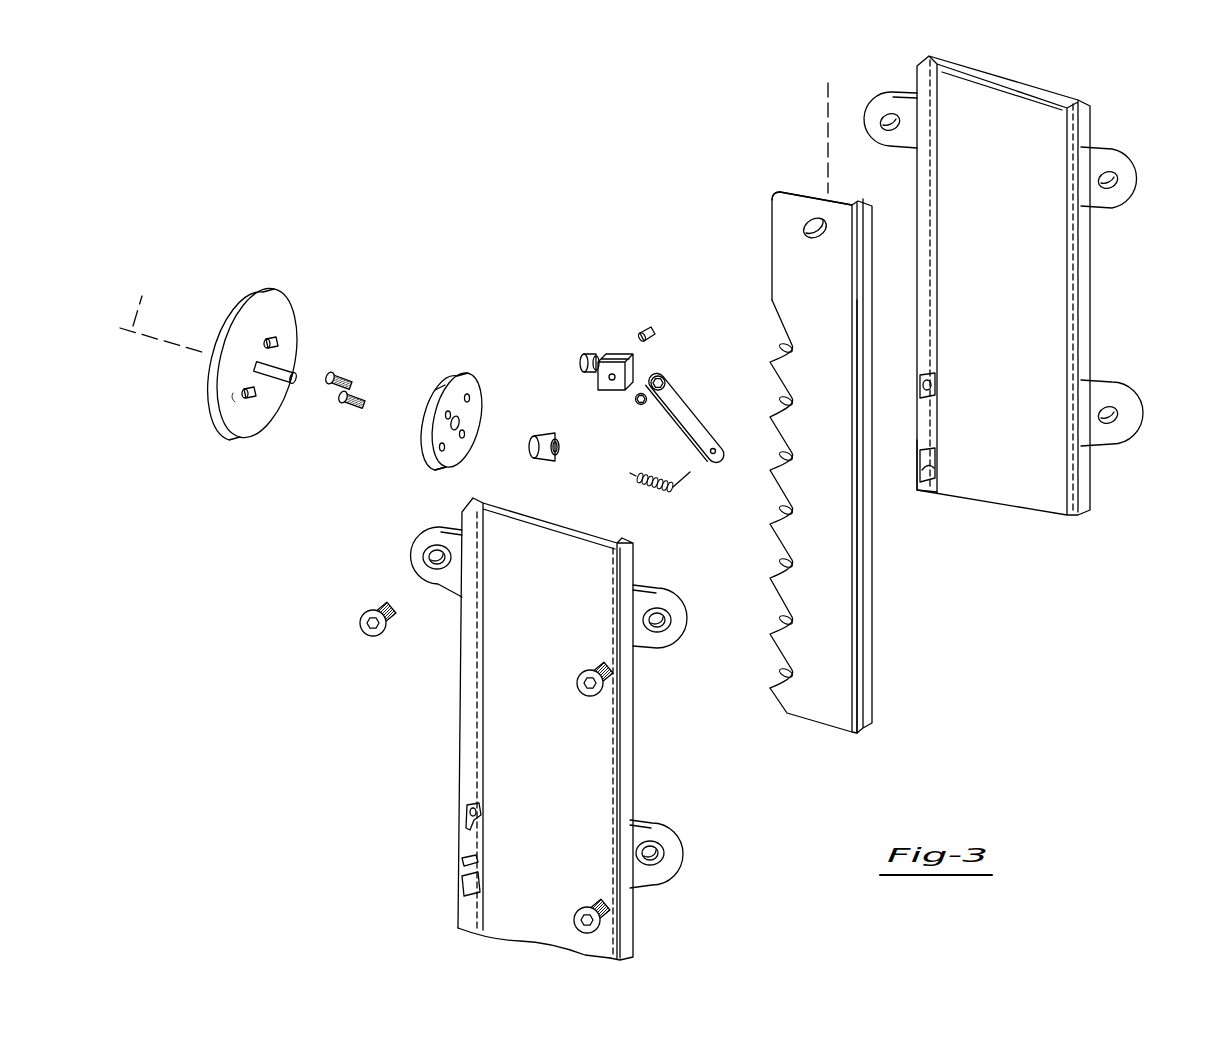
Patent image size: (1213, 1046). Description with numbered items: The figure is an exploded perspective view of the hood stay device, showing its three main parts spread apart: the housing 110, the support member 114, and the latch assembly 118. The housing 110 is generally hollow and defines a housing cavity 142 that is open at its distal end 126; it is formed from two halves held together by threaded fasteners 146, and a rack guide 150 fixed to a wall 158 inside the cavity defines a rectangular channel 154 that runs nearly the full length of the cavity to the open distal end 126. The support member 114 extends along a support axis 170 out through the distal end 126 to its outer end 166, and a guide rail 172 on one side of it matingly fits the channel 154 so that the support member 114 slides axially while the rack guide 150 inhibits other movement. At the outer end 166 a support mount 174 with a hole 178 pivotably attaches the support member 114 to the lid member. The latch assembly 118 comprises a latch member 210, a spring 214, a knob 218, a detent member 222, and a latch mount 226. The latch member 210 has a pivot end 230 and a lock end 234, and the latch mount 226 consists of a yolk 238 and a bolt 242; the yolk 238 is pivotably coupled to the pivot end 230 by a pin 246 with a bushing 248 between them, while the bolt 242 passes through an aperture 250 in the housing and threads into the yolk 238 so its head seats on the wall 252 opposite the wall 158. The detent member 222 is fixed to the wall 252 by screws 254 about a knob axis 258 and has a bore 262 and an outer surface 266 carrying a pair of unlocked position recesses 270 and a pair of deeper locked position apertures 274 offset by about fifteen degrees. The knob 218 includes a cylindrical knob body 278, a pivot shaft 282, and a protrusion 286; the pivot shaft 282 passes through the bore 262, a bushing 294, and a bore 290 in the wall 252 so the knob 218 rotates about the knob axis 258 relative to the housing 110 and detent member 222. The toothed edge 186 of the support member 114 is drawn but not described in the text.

The housing 110 is at (779, 501).
The support member 114 is at (811, 405).
The latch assembly 118 is at (231, 341).
The distal end 126 is at (922, 62).
The housing cavity 142 is at (1017, 279).
The threaded fasteners 146 is at (358, 618).
The rack guide 150 is at (1066, 118).
The channel 154 is at (1080, 104).
The wall 158 is at (1087, 242).
The outer end 166 is at (832, 193).
The support axis 170 is at (828, 97).
The guide rail 172 is at (865, 668).
The support mount 174 is at (788, 203).
The hole 178 is at (808, 240).
The toothed edge 186 is at (780, 407).
The latch member 210 is at (700, 437).
The spring 214 is at (654, 490).
The knob 218 is at (231, 348).
The detent member 222 is at (437, 398).
The latch mount 226 is at (637, 399).
The pivot end 230 is at (656, 375).
The lock end 234 is at (720, 460).
The yolk 238 is at (603, 392).
The bolt 242 is at (580, 360).
The pin 246 is at (644, 330).
The bushing 248 is at (641, 406).
The aperture 250 is at (928, 403).
The wall 252 is at (922, 262).
The screws 254 is at (352, 392).
The knob axis 258 is at (143, 295).
The bore 262 is at (462, 422).
The outer surface 266 is at (440, 452).
The unlocked position recess 270 is at (445, 397).
The locked position aperture 274 is at (468, 395).
The knob body 278 is at (235, 402).
The pivot shaft 282 is at (262, 368).
The protrusion 286 is at (275, 338).
The bore 290 is at (932, 480).
The bushing 294 is at (545, 460).